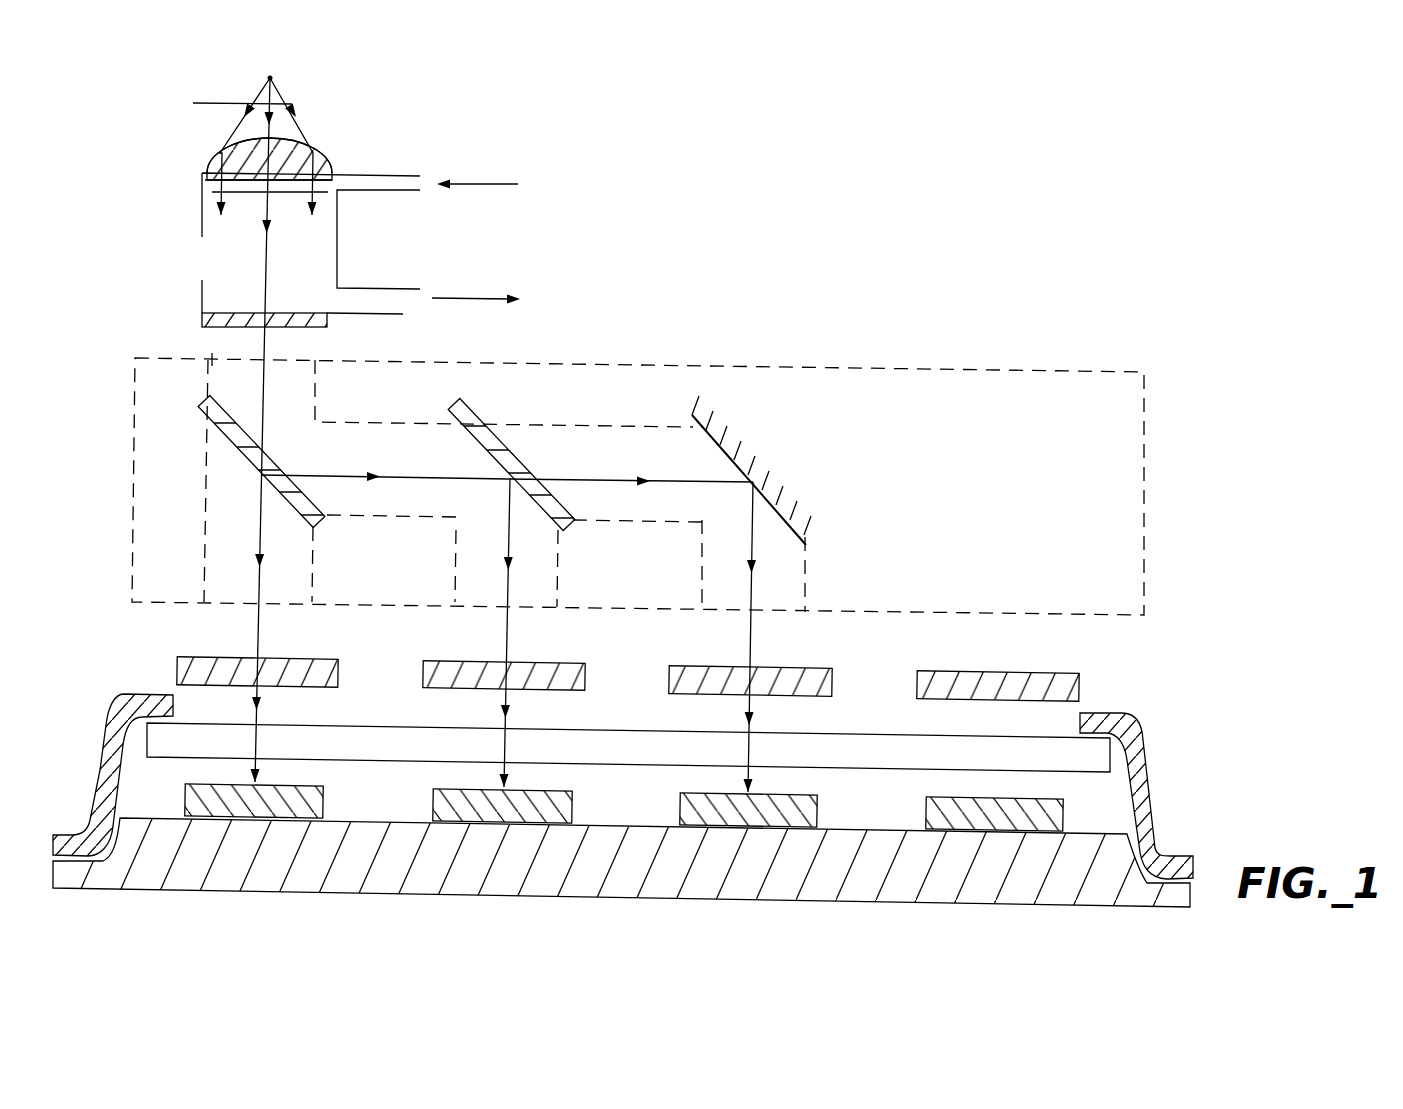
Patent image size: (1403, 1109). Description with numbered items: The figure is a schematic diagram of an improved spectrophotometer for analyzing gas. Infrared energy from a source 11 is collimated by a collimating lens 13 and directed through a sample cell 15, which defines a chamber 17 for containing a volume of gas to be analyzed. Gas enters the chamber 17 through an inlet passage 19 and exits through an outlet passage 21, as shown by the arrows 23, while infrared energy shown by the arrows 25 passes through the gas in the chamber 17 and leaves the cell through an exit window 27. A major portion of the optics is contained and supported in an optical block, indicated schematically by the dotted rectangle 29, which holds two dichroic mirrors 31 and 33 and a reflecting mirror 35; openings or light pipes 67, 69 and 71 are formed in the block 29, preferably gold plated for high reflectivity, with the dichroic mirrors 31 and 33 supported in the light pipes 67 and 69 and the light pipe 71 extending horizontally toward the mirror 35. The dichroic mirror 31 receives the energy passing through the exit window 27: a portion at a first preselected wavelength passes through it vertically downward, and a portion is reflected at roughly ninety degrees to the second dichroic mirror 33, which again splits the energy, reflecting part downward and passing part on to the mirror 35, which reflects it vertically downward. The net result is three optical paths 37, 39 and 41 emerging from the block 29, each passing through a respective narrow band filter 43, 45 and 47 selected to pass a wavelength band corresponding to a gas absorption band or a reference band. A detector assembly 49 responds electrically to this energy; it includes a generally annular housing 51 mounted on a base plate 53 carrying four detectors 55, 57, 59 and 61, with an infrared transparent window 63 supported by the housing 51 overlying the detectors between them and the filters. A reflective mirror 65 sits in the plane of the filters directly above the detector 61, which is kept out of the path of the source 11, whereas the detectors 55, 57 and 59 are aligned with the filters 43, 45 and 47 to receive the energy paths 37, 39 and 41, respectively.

The source 11 is at (302, 67).
The collimating lens 13 is at (327, 165).
The sample cell 15 is at (402, 168).
The chamber 17 is at (302, 277).
The inlet passage 19 is at (375, 192).
The outlet passage 21 is at (365, 318).
The arrows 23 is at (467, 298).
The arrows 25 is at (225, 184).
The exit window 27 is at (228, 336).
The optical block 29 is at (957, 370).
The dichroic mirror 31 is at (227, 440).
The second dichroic mirror 33 is at (470, 438).
The reflecting mirror 35 is at (710, 436).
The optical path 37 is at (258, 627).
The optical path 39 is at (507, 632).
The optical path 41 is at (753, 631).
The narrow band filter 43 is at (200, 656).
The narrow band filter 45 is at (433, 660).
The narrow band filter 47 is at (685, 665).
The detector assembly 49 is at (1175, 795).
The housing 51 is at (1138, 722).
The base plate 53 is at (920, 906).
The detector 55 is at (305, 788).
The detector 57 is at (553, 792).
The detector 59 is at (787, 796).
The detector 61 is at (950, 800).
The infrared transparent window 63 is at (567, 728).
The reflective mirror 65 is at (1014, 671).
The light pipe 67 is at (210, 375).
The light pipe 69 is at (458, 548).
The light pipe 71 is at (533, 420).